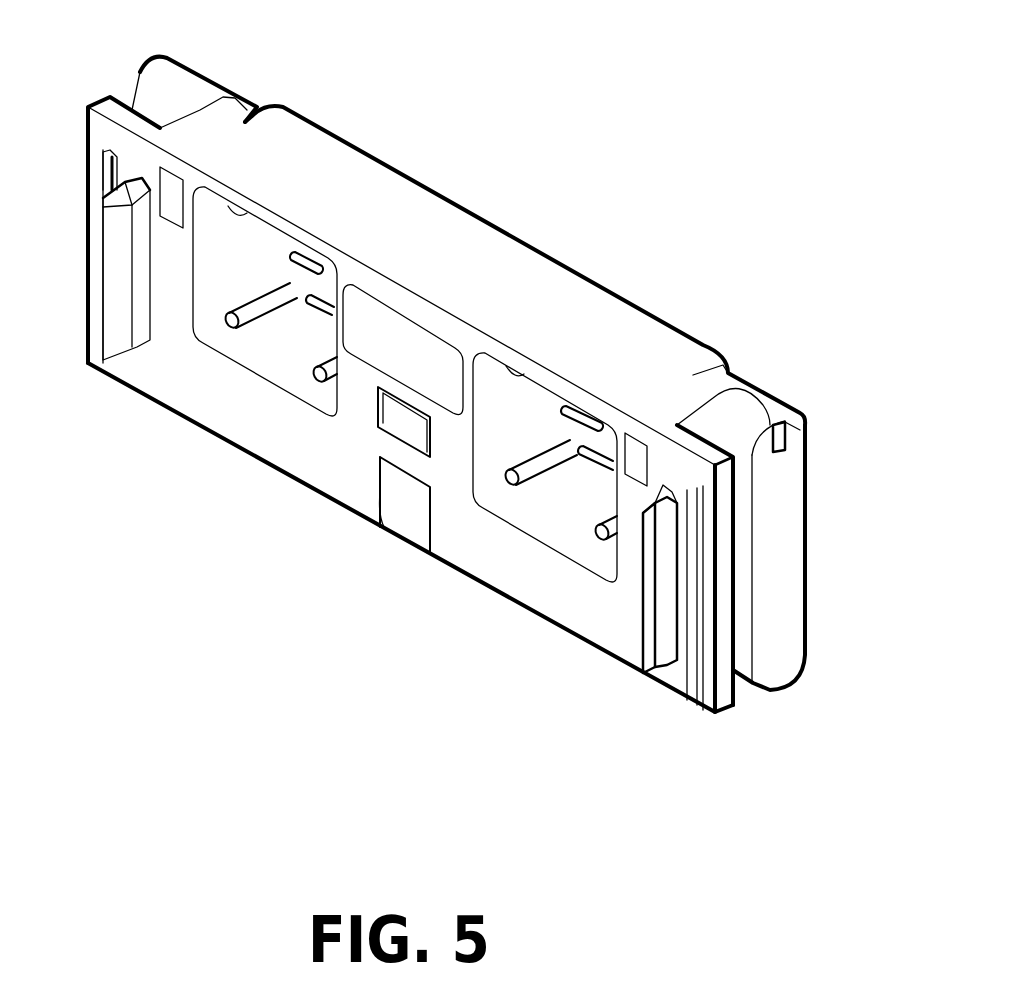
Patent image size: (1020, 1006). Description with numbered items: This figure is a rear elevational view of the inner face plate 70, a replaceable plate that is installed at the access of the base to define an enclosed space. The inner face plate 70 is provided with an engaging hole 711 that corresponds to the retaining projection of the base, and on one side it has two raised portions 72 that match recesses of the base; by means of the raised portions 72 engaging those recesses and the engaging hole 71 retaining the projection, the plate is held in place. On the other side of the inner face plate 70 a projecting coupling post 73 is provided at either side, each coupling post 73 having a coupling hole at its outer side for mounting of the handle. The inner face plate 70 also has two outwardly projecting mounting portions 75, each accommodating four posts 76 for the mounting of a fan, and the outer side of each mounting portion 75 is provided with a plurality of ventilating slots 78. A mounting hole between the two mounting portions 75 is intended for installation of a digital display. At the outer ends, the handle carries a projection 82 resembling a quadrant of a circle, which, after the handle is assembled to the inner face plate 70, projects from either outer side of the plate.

The inner face plate 70 is at (506, 195).
The engaging hole 71 is at (113, 160).
The raised portions 72 is at (660, 553).
The coupling post 73 is at (703, 393).
The mounting portions 75 is at (260, 365).
The posts 76 is at (227, 317).
The ventilating slots 78 is at (580, 417).
The projection 82 is at (795, 433).
The engaging hole 711 is at (400, 423).